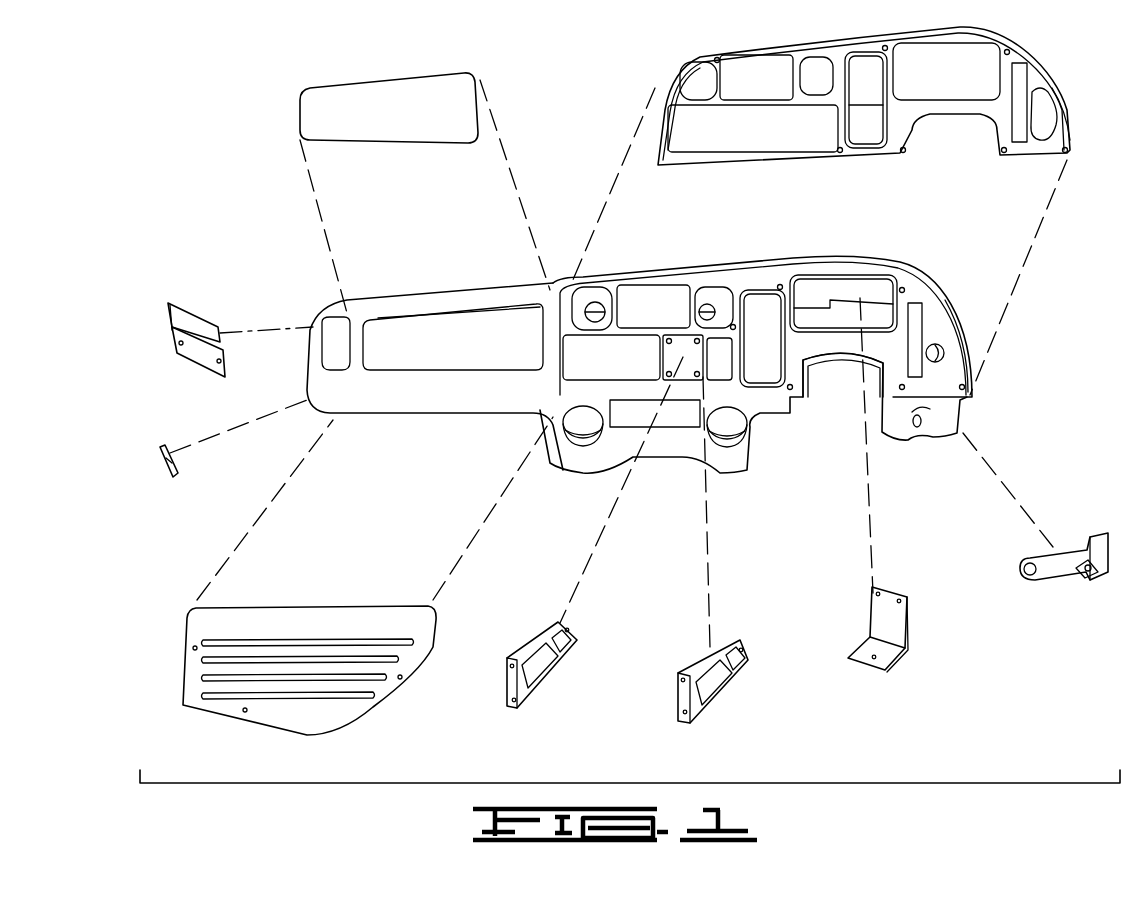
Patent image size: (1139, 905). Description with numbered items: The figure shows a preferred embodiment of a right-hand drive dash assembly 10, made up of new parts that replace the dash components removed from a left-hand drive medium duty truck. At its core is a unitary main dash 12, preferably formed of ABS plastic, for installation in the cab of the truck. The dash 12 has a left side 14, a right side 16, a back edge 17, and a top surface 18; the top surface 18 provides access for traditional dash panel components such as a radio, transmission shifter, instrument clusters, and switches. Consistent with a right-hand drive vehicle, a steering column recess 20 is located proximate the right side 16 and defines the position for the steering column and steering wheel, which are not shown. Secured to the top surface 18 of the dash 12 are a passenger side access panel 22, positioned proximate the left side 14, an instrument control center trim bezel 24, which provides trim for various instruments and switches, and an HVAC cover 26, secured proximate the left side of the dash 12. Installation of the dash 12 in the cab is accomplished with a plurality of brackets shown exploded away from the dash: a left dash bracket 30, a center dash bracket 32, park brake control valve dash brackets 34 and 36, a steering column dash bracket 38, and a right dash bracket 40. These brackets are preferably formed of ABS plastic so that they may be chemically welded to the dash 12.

The right-hand drive dash assembly 10 is at (215, 172).
The main dash 12 is at (965, 400).
The left side 14 is at (312, 323).
The right side 16 is at (952, 307).
The back edge 17 is at (818, 287).
The top surface 18 is at (912, 290).
The steering column recess 20 is at (882, 366).
The passenger side access panel 22 is at (480, 80).
The instrument control center trim bezel 24 is at (1050, 62).
The HVAC cover 26 is at (413, 677).
The left dash bracket 30 is at (167, 475).
The center dash bracket 32 is at (193, 308).
The park brake control valve dash bracket 34 is at (555, 668).
The park brake control valve dash bracket 36 is at (723, 643).
The steering column dash bracket 38 is at (897, 657).
The right dash bracket 40 is at (1090, 583).